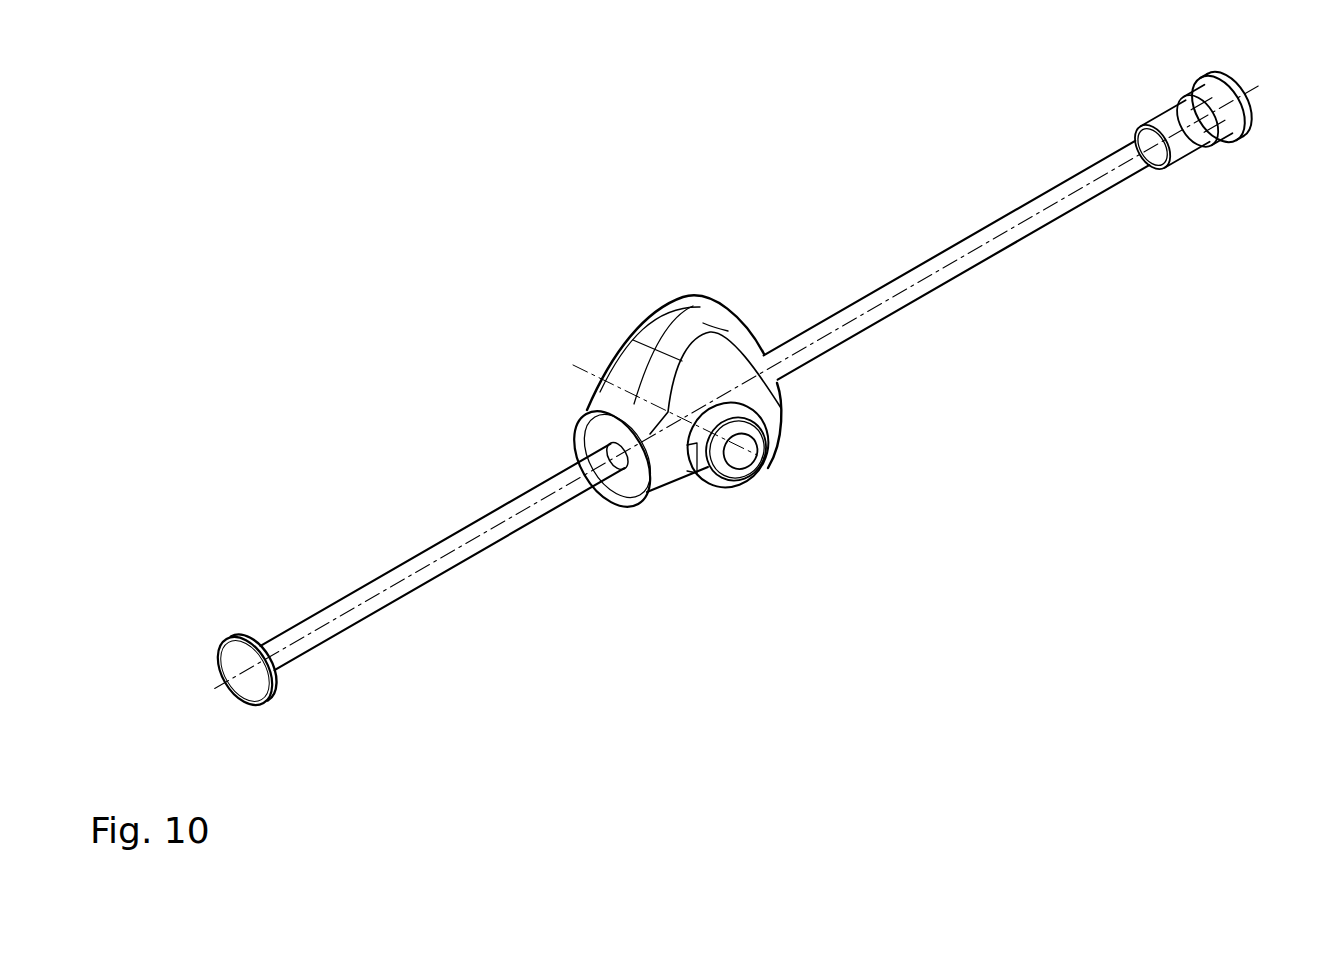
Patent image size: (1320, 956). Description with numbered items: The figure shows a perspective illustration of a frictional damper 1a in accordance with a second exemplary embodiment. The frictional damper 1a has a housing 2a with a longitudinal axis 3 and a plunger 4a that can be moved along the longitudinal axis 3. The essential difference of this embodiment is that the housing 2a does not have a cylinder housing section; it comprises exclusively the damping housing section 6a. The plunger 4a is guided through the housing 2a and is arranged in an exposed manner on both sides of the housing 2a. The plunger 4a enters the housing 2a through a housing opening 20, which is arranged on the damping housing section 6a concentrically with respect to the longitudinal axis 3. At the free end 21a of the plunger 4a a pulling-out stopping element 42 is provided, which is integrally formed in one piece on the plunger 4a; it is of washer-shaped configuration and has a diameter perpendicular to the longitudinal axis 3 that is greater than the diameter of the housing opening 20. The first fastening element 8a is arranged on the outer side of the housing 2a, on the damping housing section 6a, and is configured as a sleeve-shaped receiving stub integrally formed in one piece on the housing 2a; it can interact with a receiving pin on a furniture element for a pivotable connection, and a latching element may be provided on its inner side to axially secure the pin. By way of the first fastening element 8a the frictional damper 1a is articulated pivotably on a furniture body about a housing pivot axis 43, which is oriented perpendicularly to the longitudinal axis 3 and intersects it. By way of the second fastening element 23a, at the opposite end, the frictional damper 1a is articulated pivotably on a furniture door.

The frictional damper 1a is at (717, 402).
The housing 2a is at (677, 343).
The damping housing section 6a is at (706, 360).
The longitudinal axis 3 is at (983, 247).
The plunger 4a is at (362, 590).
The first fastening element 8a is at (781, 469).
The housing opening 20 is at (620, 505).
The free end 21a is at (251, 659).
The second fastening element 23a is at (1228, 150).
The pulling-out stopping element 42 is at (253, 688).
The housing pivot axis 43 is at (755, 470).